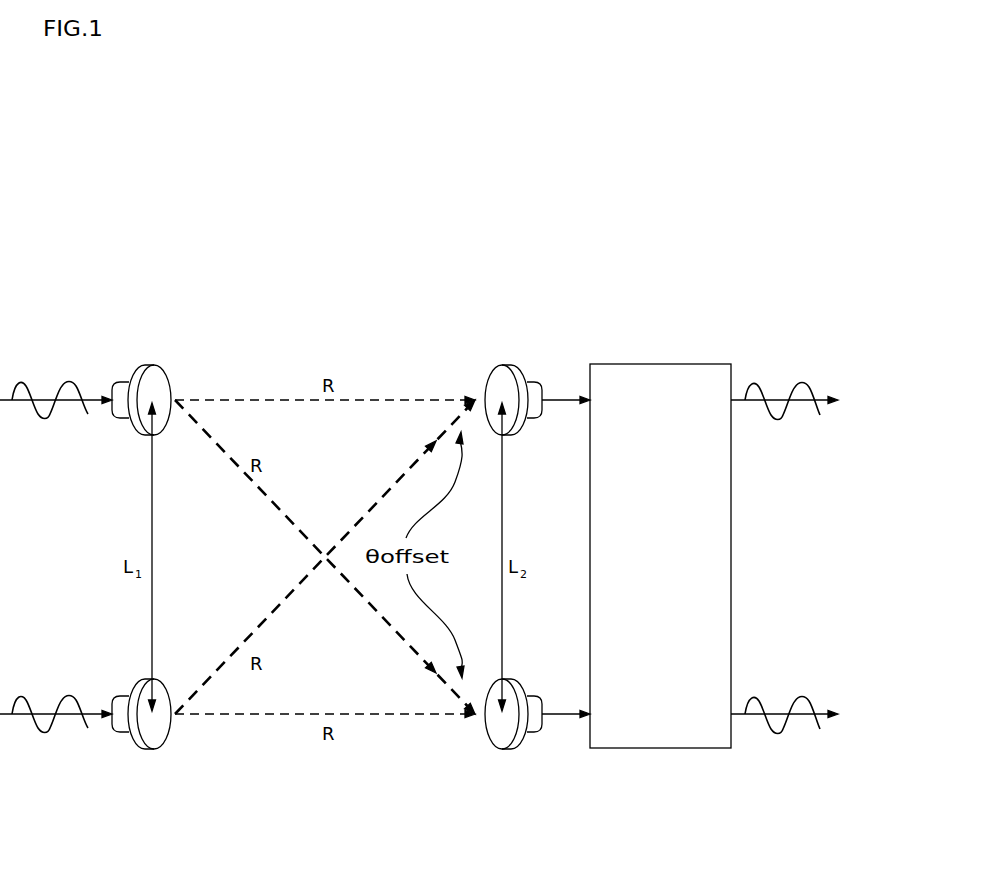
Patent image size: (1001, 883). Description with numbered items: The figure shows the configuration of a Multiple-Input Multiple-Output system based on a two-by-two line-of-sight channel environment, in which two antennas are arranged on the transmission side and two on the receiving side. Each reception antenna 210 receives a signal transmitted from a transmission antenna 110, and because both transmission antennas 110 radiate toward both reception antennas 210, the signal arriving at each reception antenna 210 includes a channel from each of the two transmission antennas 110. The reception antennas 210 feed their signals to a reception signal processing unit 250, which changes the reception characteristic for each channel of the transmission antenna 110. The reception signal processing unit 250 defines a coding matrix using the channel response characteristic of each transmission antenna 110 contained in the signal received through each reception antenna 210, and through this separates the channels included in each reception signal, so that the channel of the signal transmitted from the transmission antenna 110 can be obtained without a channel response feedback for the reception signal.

The transmission antenna 110 is at (157, 327).
The reception antenna 210 is at (508, 327).
The reception signal processing unit 250 is at (659, 364).